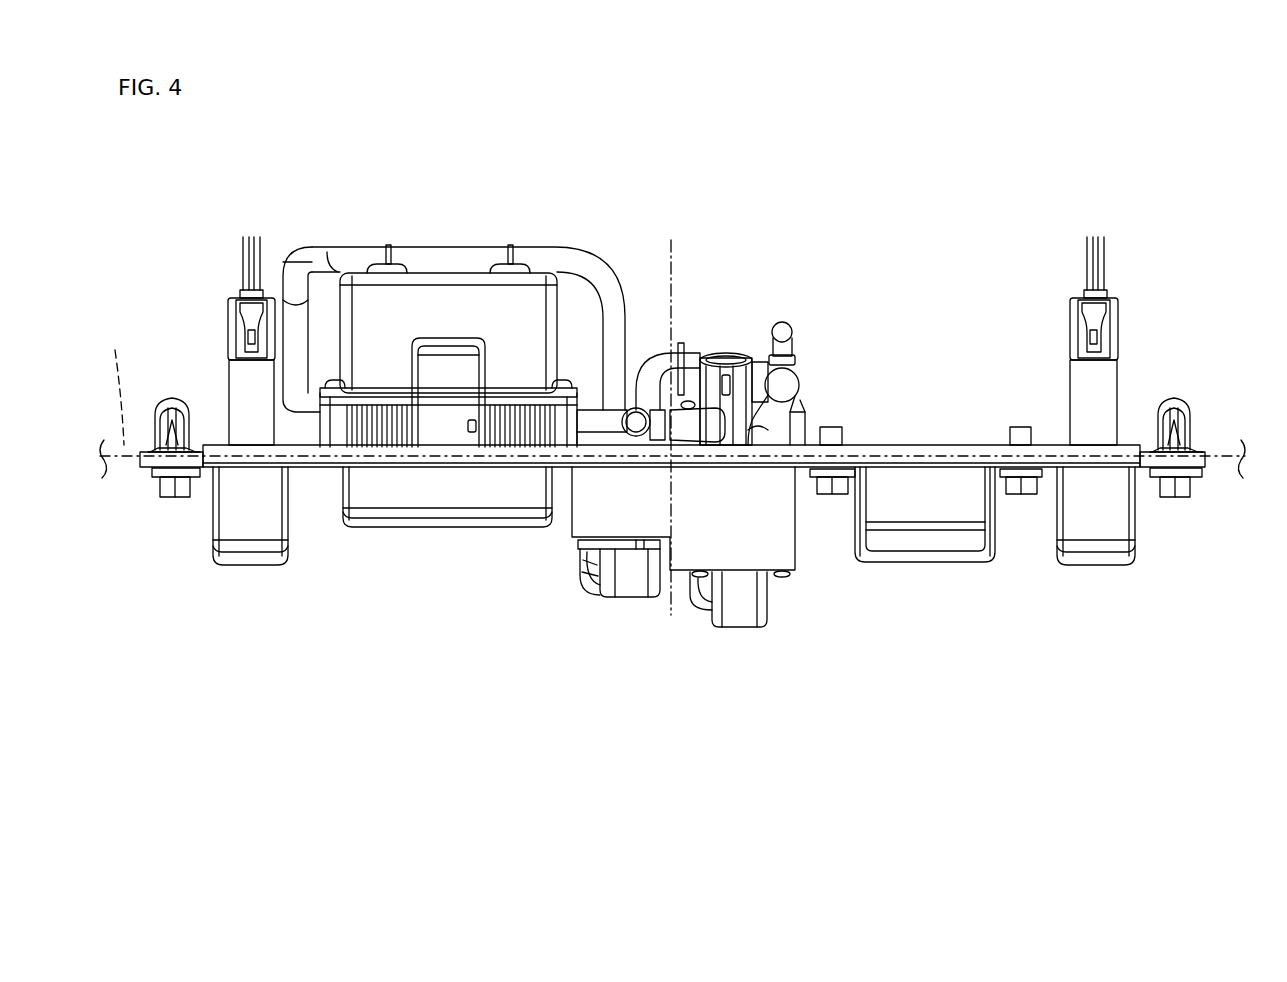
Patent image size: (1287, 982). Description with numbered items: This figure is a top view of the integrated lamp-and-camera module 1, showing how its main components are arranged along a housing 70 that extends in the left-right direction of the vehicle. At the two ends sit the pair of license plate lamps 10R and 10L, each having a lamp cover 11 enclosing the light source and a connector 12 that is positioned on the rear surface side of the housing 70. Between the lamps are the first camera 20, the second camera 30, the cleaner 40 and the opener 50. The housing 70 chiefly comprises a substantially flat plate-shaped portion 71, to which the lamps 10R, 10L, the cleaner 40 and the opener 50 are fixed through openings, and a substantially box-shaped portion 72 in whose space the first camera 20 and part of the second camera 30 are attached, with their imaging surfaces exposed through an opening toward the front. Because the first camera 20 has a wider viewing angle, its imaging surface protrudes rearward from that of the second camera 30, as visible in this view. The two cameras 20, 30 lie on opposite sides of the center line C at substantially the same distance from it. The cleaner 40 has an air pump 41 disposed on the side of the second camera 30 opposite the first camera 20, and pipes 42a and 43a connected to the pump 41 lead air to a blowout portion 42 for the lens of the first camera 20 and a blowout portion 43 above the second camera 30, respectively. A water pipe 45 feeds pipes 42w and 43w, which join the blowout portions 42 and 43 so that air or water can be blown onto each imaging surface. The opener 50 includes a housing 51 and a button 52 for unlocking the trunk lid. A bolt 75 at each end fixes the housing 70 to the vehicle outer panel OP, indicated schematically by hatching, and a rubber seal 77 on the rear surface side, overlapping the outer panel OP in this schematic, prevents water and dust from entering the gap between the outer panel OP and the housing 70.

The integrated lamp-and-camera module 1 is at (1052, 195).
The license plate lamp 10L is at (285, 555).
The license plate lamp 10R is at (1130, 563).
The lamp cover 11 is at (240, 550).
The connector 12 is at (228, 298).
The first camera 20 is at (701, 597).
The second camera 30 is at (581, 593).
The cleaner 40 is at (487, 224).
The pump 41 is at (428, 290).
The blowout portion 42 is at (740, 605).
The pipe 42a is at (597, 418).
The pipe 42w is at (800, 418).
The blowout portion 43 is at (627, 585).
The pipe 43a is at (357, 263).
The pipe 43w is at (660, 370).
The pipe 45 is at (786, 325).
The opener 50 is at (935, 564).
The housing 51 is at (920, 487).
The button 52 is at (975, 545).
The housing 70 is at (848, 458).
The plate-shaped portion 71 is at (886, 465).
The box-shaped portion 72 is at (780, 545).
The bolt 75 is at (165, 490).
The seal 77 is at (970, 450).
The center line C is at (670, 415).
The outer panel OP is at (110, 385).